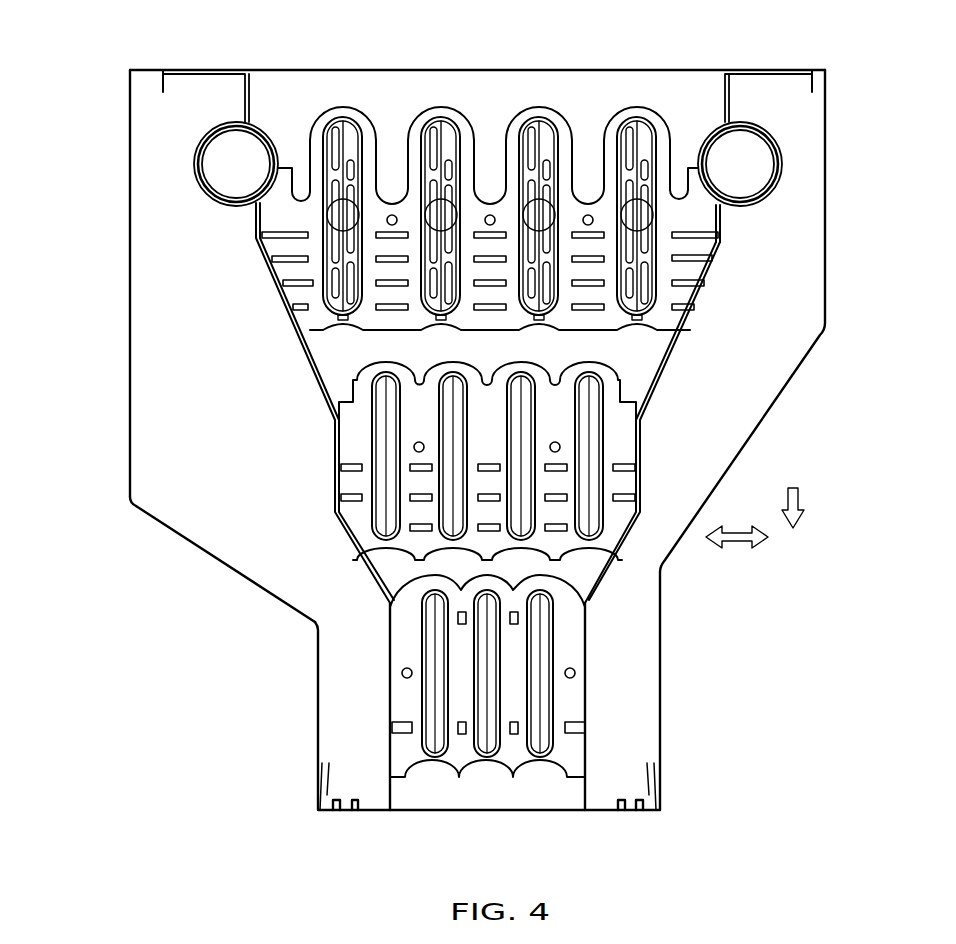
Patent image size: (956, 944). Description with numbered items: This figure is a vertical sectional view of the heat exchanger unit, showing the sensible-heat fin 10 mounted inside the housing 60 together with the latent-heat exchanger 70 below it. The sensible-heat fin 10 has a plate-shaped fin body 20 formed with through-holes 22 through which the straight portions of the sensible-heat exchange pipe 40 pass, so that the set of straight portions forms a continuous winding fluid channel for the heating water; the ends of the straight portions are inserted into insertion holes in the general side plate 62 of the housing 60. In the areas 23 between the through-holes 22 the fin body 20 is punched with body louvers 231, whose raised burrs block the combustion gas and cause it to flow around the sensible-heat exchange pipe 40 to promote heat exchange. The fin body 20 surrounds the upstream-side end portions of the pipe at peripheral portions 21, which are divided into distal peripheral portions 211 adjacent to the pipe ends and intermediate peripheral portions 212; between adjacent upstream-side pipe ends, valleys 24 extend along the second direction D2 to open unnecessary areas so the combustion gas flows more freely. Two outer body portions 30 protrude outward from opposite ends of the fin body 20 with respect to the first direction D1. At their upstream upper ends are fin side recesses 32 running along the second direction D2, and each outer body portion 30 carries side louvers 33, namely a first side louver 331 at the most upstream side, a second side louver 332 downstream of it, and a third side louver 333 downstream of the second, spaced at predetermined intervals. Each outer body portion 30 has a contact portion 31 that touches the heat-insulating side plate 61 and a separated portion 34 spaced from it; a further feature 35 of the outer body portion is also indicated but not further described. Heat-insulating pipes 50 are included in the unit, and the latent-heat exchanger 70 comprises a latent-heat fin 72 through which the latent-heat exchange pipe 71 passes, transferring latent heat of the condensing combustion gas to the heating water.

The sensible-heat fin 10 is at (528, 308).
The fin body 20 is at (458, 209).
The peripheral portions 21 is at (424, 99).
The distal peripheral portions 211 is at (130, 72).
The intermediate peripheral portions 212 is at (246, 120).
The through-holes 22 is at (326, 300).
The areas between the through-holes 23 is at (478, 310).
The body louvers 231 is at (490, 335).
The valleys 24 is at (386, 196).
The outer body portions 30 is at (554, 403).
The contact portion 31 is at (686, 172).
The fin side recesses 32 is at (677, 192).
The side louvers 33 is at (798, 342).
The first side louver 331 is at (710, 262).
The second side louver 332 is at (706, 287).
The third side louver 333 is at (700, 310).
The separated portion 34 is at (698, 325).
The side wall 35 is at (720, 222).
The sensible-heat exchange pipe 40 is at (322, 277).
The heat-insulating pipes 50 is at (782, 160).
The housing 60 is at (426, 440).
The heat-insulating side plates 61 is at (196, 559).
The general side plate 62 is at (130, 412).
The latent-heat exchanger 70 is at (398, 574).
The latent-heat exchange pipe 71 is at (360, 518).
The latent-heat fin 72 is at (418, 550).
The first direction D1 is at (738, 548).
The second direction D2 is at (800, 502).